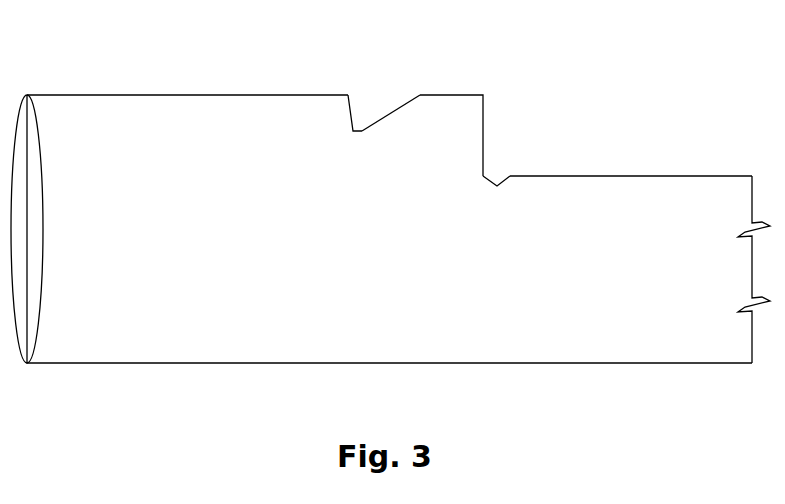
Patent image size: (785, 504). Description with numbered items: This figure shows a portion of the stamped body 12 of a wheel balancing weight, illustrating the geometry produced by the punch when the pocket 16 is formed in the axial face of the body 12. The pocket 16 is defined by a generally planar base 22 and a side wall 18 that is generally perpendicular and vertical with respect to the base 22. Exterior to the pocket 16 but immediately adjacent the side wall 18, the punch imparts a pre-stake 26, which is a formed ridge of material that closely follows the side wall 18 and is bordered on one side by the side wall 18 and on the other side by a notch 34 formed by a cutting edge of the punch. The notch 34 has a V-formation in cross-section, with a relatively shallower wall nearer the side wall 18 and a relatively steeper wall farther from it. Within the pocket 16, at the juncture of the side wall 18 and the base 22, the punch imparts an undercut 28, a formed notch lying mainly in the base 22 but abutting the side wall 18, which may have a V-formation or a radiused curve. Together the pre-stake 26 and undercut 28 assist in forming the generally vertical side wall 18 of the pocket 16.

The body 12 is at (201, 266).
The pocket 16 is at (731, 141).
The side wall 18 is at (487, 138).
The base 22 is at (640, 175).
The pre-stake 26 is at (431, 85).
The undercut 28 is at (505, 177).
The notch 34 is at (373, 112).